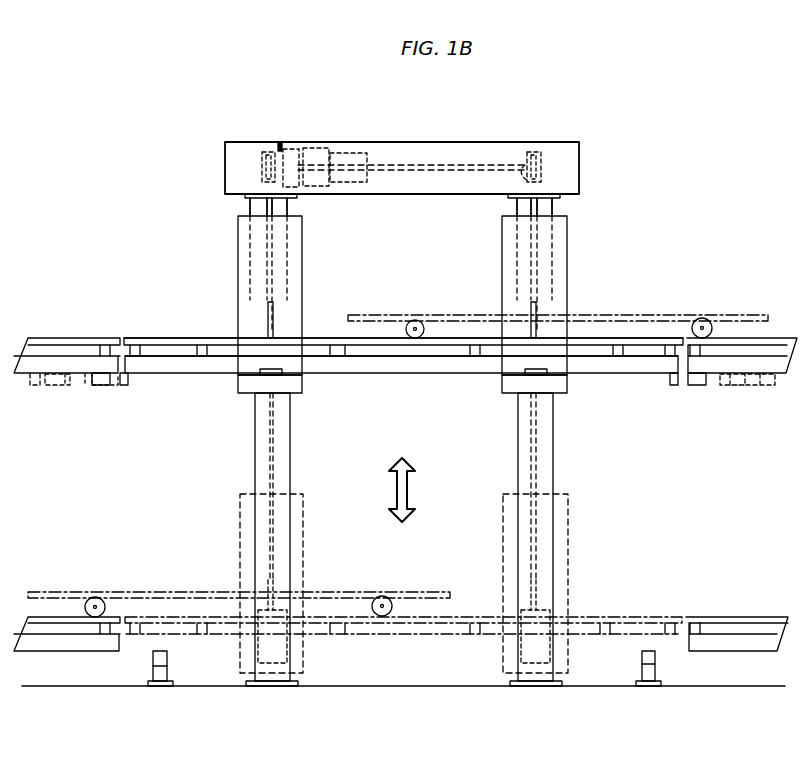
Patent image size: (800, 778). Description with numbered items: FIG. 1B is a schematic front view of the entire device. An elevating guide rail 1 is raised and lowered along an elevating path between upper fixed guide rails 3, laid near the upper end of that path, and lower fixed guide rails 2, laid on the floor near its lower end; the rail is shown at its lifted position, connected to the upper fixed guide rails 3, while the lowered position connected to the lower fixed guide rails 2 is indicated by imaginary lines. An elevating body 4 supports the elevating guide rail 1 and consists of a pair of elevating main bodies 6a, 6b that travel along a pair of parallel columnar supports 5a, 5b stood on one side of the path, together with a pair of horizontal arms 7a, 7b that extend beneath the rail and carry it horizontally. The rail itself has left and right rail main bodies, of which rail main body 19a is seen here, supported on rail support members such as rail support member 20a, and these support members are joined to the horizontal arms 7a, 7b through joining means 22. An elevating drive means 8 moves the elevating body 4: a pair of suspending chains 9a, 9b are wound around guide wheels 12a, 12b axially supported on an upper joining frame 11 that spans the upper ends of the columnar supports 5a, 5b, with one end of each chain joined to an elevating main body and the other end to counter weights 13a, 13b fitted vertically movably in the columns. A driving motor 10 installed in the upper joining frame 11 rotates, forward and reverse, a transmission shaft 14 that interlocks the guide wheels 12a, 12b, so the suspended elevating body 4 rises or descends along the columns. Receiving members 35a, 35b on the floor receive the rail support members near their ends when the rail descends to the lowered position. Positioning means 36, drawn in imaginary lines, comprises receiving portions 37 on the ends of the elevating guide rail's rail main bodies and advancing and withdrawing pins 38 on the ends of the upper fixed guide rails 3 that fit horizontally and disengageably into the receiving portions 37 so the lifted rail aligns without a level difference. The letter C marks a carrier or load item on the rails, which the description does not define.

The elevating guide rail 1 is at (178, 335).
The lower fixed guide rails 2 is at (63, 614).
The upper fixed guide rails 3 is at (60, 335).
The elevating body 4 is at (570, 243).
The columnar support 5a is at (553, 440).
The columnar support 5b is at (258, 445).
The elevating main body 6a is at (567, 262).
The elevating main body 6b is at (245, 254).
The horizontal arm 7a is at (530, 386).
The horizontal arm 7b is at (275, 386).
The elevating drive means 8 is at (281, 140).
The suspending chain 9a is at (545, 208).
The suspending chain 9b is at (252, 208).
The driving motor 10 is at (322, 150).
The upper joining frame 11 is at (568, 162).
The guide wheel 12a is at (520, 160).
The guide wheel 12b is at (262, 160).
The counter weight 13a is at (536, 688).
The counter weight 13b is at (272, 688).
The transmission shaft 14 is at (414, 172).
The rail main body 19a is at (318, 338).
The rail support member 20a is at (405, 374).
The joining means 22 is at (265, 370).
The receiving member 35a is at (652, 660).
The receiving member 35b is at (158, 660).
The positioning means 36 is at (76, 391).
The receiving portion 37 is at (124, 388).
The advancing and withdrawing pin 38 is at (104, 388).
The carrier C is at (668, 312).